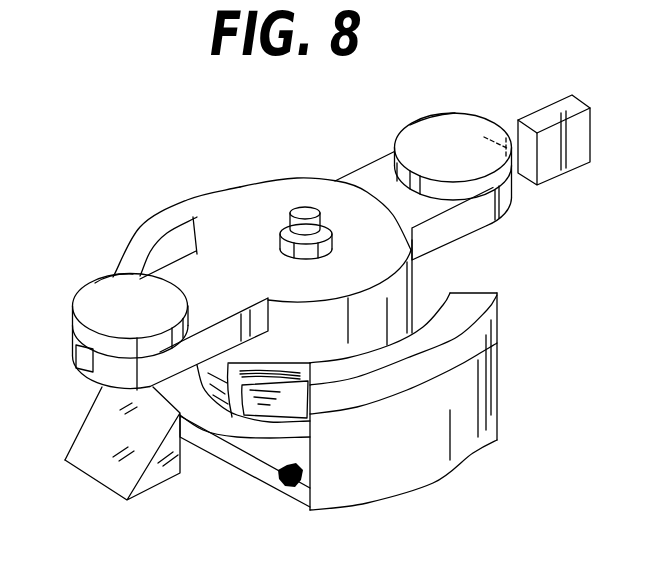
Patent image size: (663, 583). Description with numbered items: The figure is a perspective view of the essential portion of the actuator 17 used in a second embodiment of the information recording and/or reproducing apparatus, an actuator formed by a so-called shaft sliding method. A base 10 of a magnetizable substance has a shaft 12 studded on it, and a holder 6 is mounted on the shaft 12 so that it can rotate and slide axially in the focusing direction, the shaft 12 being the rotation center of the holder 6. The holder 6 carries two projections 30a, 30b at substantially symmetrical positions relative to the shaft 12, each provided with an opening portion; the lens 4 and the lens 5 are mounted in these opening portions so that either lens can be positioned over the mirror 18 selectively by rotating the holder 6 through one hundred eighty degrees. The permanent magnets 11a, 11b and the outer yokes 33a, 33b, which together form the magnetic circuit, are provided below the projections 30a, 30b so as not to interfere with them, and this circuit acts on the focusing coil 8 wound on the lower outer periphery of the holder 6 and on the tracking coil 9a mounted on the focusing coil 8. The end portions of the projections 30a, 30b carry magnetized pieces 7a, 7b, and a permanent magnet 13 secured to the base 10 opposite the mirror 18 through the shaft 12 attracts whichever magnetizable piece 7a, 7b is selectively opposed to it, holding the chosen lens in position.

The lens 4 is at (103, 292).
The lens 5 is at (466, 130).
The holder 6 is at (308, 195).
The magnetized piece 7a is at (80, 365).
The magnetized piece 7b is at (503, 210).
The focusing coil 8 is at (223, 403).
The tracking coil 9a is at (267, 425).
The base 10 is at (287, 485).
The permanent magnet 11a is at (457, 310).
The permanent magnet 11b is at (175, 240).
The shaft 12 is at (297, 212).
The permanent magnet 13 is at (579, 127).
The actuator 17 is at (447, 497).
The mirror 18 is at (118, 463).
The projection 30a is at (112, 400).
The projection 30b is at (470, 233).
The outer yoke 33a is at (464, 411).
The outer yoke 33b is at (143, 231).